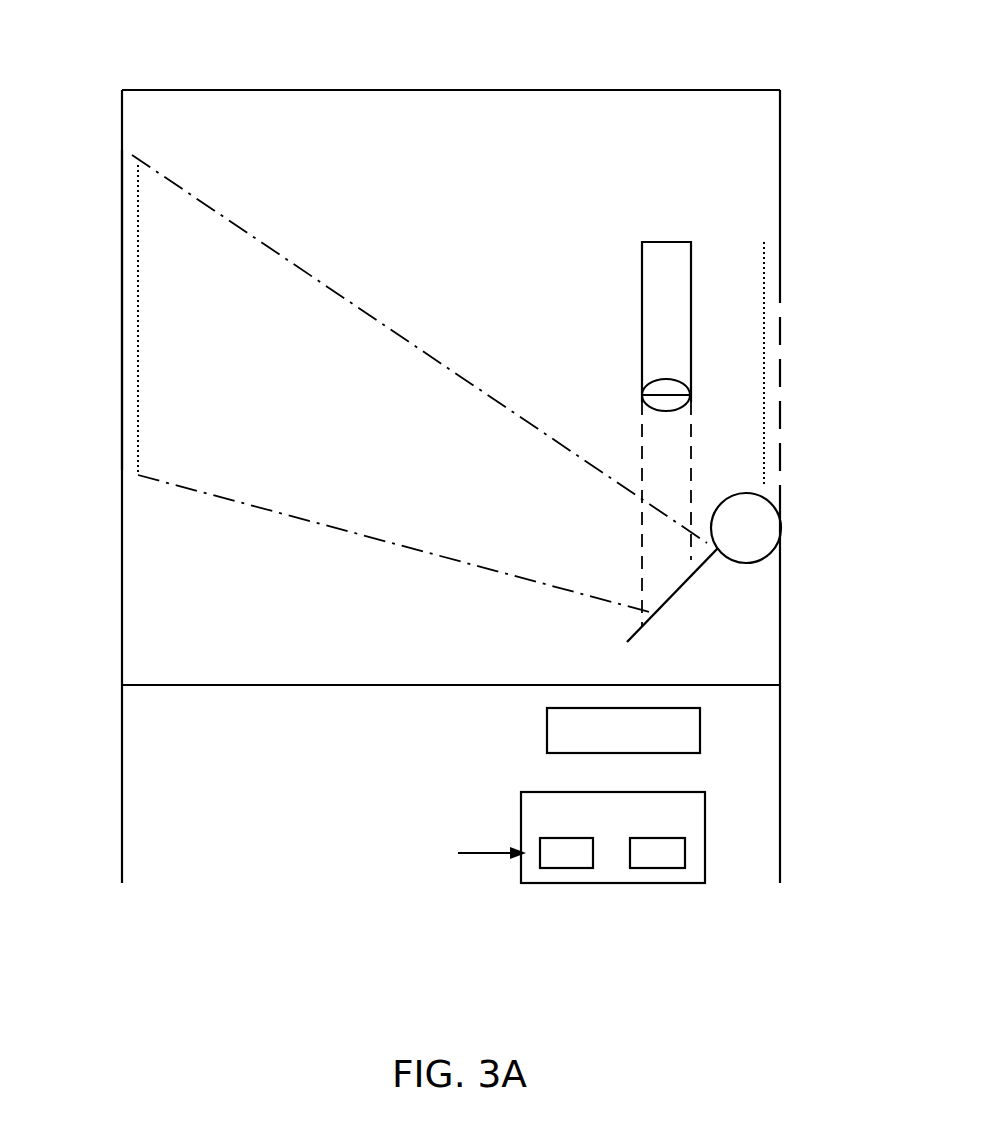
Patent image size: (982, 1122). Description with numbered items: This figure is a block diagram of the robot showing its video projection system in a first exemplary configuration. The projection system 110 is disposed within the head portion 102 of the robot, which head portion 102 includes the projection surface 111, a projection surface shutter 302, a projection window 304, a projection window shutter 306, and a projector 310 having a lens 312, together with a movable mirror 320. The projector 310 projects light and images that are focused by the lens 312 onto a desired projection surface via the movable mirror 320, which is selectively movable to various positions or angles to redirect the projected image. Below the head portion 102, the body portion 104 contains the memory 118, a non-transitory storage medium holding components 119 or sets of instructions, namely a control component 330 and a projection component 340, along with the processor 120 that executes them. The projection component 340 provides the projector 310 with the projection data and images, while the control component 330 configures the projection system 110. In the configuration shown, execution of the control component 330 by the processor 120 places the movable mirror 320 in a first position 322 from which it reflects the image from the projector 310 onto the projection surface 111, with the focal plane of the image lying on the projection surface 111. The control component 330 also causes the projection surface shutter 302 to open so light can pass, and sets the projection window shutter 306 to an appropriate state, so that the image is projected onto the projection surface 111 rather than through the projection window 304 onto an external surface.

The head portion 102 is at (647, 52).
The body portion 104 is at (495, 805).
The projection system 110 is at (706, 390).
The projection surface 111 is at (122, 298).
The memory 118 is at (552, 792).
The components 119 is at (468, 853).
The processor 120 is at (547, 725).
The projection surface shutter 302 is at (138, 248).
The projection window 304 is at (780, 350).
The projection window shutter 306 is at (764, 288).
The projector 310 is at (642, 300).
The lens 312 is at (650, 385).
The movable mirror 320 is at (752, 525).
The first position 322 is at (672, 597).
The control component 330 is at (565, 870).
The projection component 340 is at (663, 870).